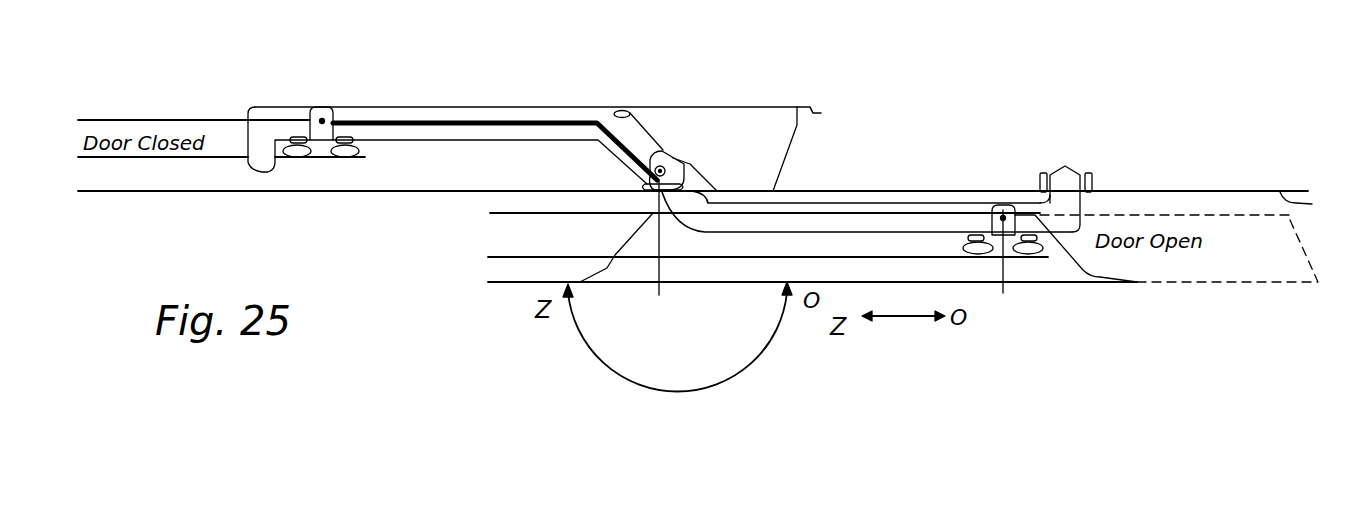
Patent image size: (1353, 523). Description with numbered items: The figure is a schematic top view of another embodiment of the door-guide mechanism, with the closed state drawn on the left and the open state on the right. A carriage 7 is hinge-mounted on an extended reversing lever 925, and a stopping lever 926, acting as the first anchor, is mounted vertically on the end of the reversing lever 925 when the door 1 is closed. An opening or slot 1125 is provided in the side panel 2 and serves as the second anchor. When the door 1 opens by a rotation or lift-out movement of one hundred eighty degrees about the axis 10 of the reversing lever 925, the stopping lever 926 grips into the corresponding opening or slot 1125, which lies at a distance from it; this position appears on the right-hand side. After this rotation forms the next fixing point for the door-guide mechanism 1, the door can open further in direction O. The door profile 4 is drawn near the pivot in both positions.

The door 1 is at (165, 192).
The side panel 2 is at (1312, 204).
The door profile 4 is at (783, 150).
The carriage 7 is at (323, 143).
The axis 10 is at (674, 160).
The reversing lever 925 is at (448, 107).
The stopping lever 926 is at (263, 168).
The opening or slot 1125 is at (1095, 183).